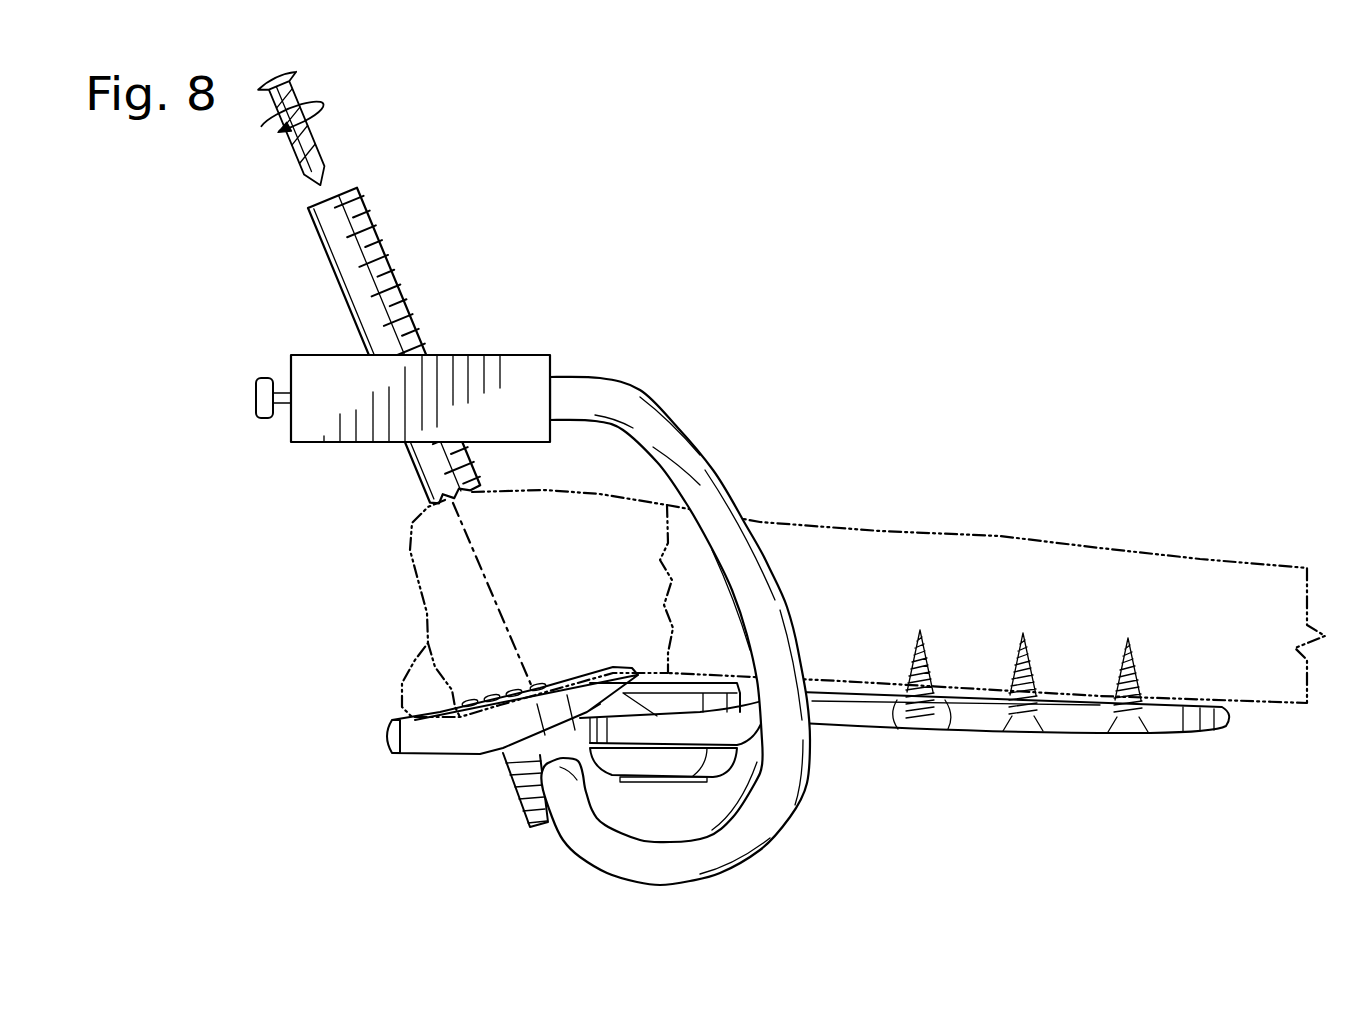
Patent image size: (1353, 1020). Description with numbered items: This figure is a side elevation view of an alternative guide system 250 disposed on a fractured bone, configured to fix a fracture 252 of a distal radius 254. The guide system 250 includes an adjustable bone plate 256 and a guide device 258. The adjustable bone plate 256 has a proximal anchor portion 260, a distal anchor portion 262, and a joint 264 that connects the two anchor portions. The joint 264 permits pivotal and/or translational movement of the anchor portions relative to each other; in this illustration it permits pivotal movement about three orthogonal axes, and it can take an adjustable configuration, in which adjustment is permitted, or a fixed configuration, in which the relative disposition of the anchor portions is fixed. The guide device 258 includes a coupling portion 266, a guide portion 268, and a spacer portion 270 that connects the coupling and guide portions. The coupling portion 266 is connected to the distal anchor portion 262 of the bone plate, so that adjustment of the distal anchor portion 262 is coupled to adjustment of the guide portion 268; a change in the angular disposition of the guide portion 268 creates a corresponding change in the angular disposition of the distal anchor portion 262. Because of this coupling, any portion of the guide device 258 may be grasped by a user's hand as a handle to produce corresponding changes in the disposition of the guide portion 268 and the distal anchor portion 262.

The guide system 250 is at (208, 438).
The fracture 252 is at (666, 494).
The distal radius 254 is at (835, 517).
The adjustable bone plate 256 is at (862, 742).
The guide device 258 is at (500, 341).
The proximal anchor portion 260 is at (1067, 738).
The distal anchor portion 262 is at (447, 755).
The joint 264 is at (638, 787).
The coupling portion 266 is at (527, 817).
The guide portion 268 is at (277, 354).
The spacer portion 270 is at (716, 471).